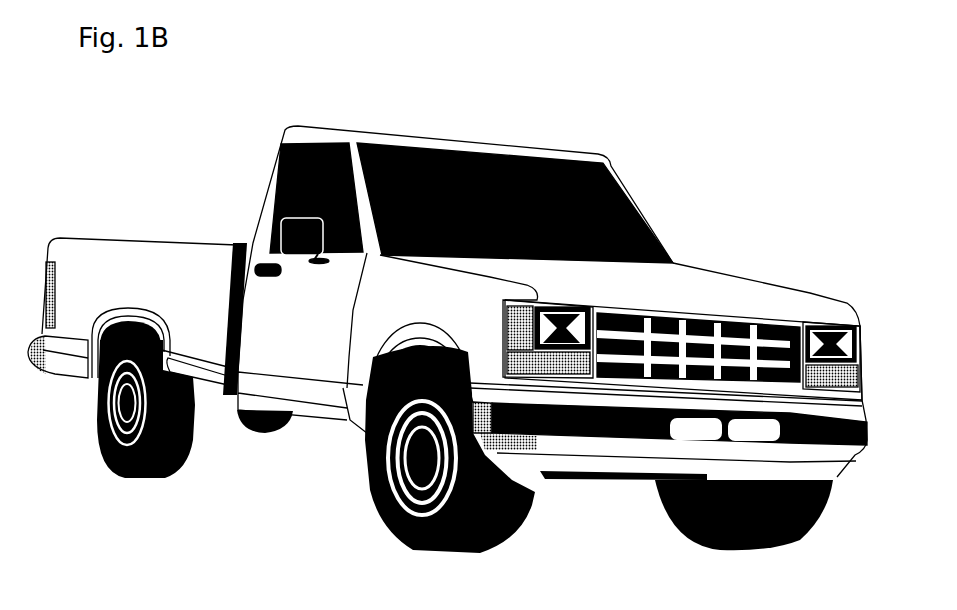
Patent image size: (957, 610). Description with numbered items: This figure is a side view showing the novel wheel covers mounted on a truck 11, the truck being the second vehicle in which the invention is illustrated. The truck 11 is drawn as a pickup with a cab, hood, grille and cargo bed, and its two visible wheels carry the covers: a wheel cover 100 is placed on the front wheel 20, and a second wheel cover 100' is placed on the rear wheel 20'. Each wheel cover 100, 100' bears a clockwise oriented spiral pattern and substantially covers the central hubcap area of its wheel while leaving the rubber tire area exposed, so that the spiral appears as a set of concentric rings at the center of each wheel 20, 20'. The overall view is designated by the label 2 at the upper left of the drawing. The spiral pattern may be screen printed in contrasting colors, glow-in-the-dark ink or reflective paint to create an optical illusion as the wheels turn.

The vehicle (pickup truck) 2 is at (164, 130).
The truck 11 is at (137, 262).
The wheel cover 100 is at (386, 482).
The front wheel 20 is at (450, 469).
The wheel cover 100' is at (96, 432).
The rear wheel 20' is at (150, 424).